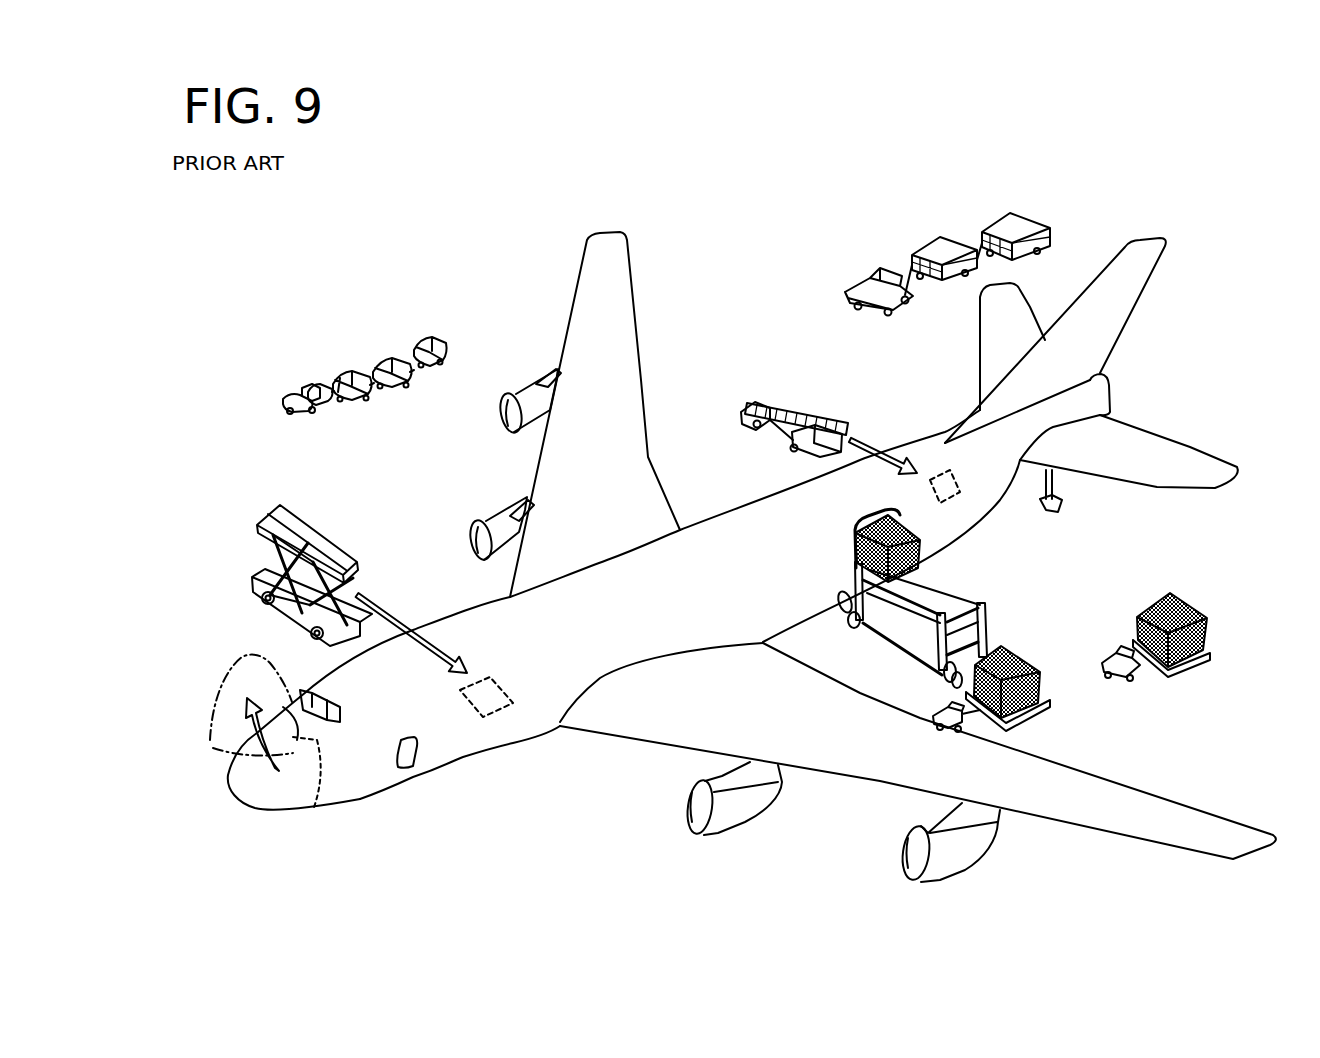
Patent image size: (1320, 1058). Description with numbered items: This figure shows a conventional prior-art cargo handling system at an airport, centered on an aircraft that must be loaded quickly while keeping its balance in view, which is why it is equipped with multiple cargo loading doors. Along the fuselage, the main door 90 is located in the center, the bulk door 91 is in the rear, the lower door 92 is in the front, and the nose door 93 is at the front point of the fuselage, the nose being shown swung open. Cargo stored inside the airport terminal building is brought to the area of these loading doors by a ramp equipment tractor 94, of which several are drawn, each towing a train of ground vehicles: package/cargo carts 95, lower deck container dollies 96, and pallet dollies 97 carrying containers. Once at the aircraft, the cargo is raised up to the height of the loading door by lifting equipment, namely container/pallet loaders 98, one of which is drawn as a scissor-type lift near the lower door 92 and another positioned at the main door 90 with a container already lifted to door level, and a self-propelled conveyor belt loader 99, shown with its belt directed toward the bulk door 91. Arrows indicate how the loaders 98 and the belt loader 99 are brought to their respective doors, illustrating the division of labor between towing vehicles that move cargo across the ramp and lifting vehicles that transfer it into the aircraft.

The main door 90 is at (857, 517).
The bulk door 91 is at (953, 492).
The lower door 92 is at (500, 712).
The nose door 93 is at (272, 807).
The ramp equipment tractor 94 is at (290, 395).
The package/cargo carts 95 is at (1053, 223).
The lower deck container dollies 96 is at (443, 343).
The pallet dollies 97 is at (1197, 657).
The container/pallet loaders 98 is at (257, 580).
The self-propelled conveyor belt loaders 99 is at (820, 417).